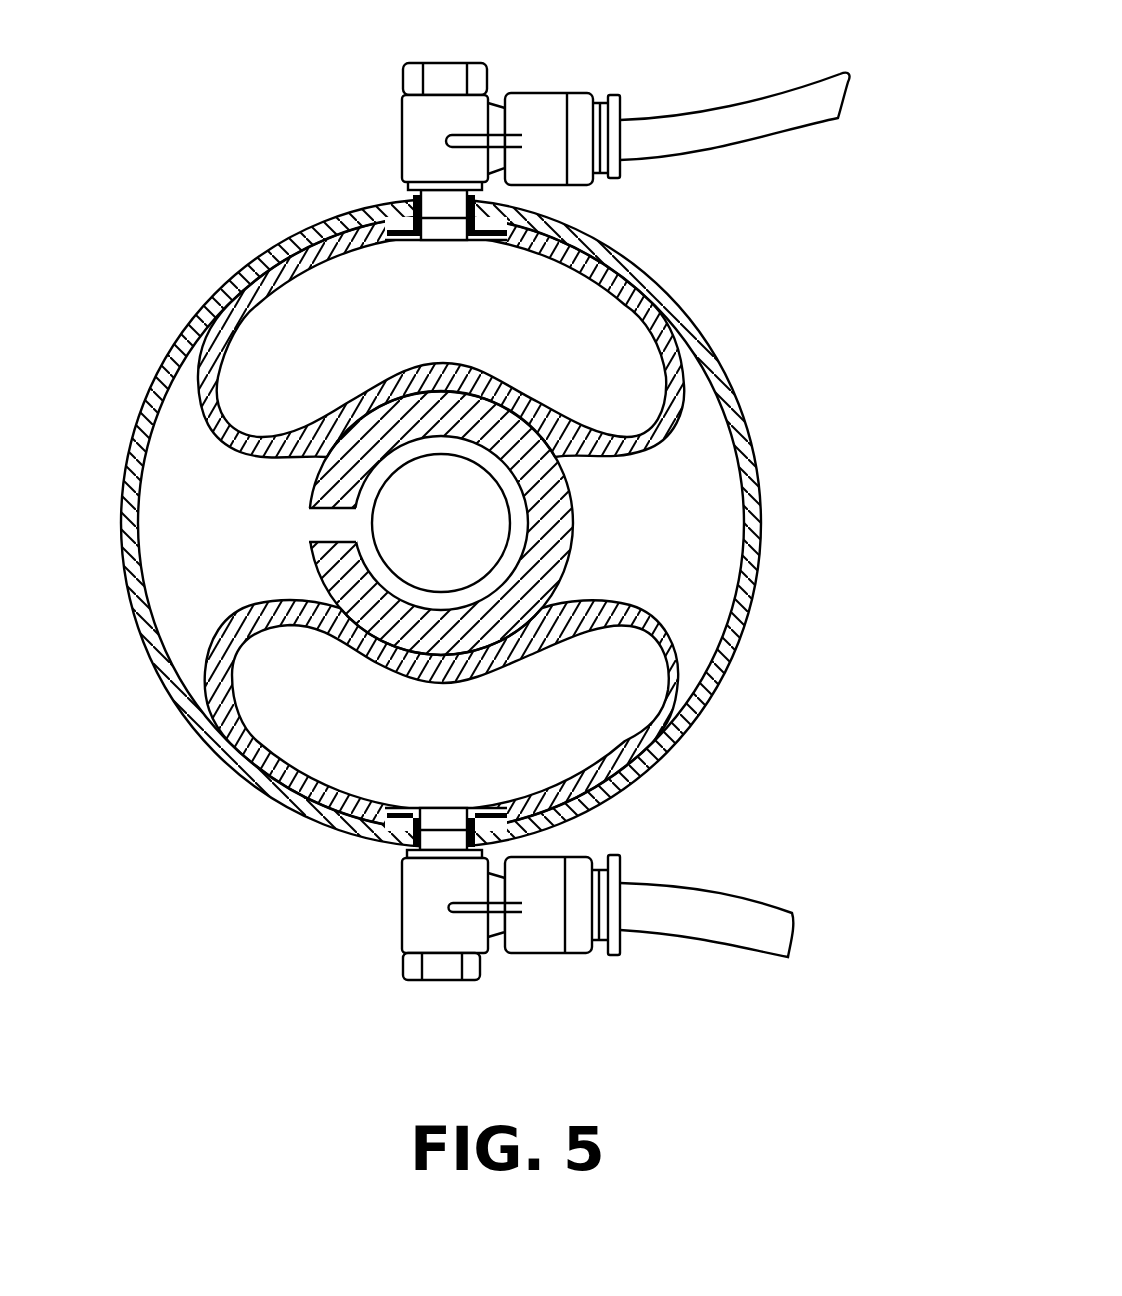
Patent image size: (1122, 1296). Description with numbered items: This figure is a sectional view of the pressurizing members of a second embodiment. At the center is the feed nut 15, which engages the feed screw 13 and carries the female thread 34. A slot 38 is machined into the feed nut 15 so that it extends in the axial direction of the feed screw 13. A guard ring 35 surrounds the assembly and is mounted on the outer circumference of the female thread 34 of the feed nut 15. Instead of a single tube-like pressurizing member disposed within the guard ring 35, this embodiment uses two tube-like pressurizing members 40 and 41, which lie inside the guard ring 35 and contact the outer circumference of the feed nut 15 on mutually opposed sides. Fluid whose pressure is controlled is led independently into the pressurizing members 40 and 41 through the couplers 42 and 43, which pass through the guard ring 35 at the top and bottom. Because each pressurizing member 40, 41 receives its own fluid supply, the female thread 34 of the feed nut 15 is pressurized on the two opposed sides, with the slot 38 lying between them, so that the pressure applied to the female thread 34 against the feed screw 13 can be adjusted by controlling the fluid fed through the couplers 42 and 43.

The feed screw 13 is at (494, 541).
The feed nut 15 is at (338, 570).
The female thread 34 is at (524, 511).
The guard ring 35 is at (760, 512).
The slot 38 is at (296, 524).
The tube-like pressurizing member 40 is at (210, 410).
The tube-like pressurizing member 41 is at (205, 668).
The coupler 42 is at (403, 140).
The coupler 43 is at (402, 903).